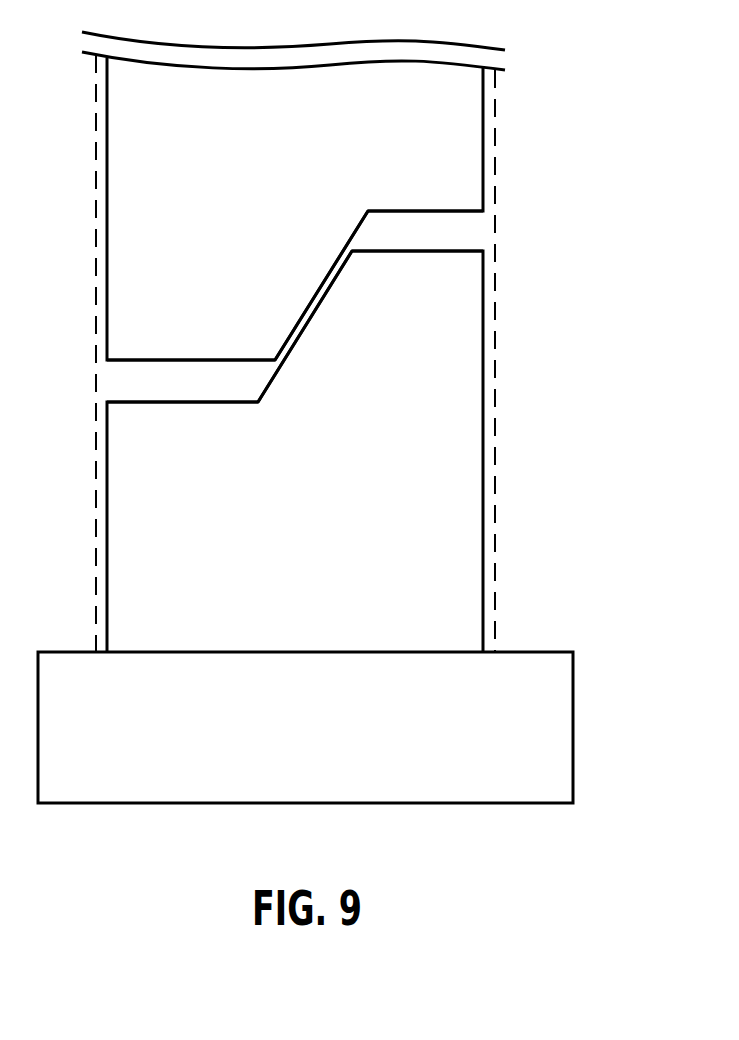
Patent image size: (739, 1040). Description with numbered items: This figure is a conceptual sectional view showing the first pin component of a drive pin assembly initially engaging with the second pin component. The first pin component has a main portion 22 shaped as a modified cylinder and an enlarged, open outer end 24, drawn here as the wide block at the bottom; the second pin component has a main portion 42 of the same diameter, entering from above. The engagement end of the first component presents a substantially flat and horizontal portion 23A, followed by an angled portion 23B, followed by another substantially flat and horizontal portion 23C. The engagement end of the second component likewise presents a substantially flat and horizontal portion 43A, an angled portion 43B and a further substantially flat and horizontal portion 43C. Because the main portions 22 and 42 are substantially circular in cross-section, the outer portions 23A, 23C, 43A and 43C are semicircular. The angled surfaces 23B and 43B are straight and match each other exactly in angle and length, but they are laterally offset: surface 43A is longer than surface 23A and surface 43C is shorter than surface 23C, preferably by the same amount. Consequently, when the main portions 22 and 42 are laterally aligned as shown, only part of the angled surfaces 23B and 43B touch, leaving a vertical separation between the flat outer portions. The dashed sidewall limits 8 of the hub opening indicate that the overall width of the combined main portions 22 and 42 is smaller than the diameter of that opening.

The sidewall limits 8 is at (96, 150).
The main portion 22 is at (120, 562).
The substantially flat and horizontal portion 23A is at (168, 402).
The angled portion 23B is at (298, 337).
The substantially flat and horizontal portion 23C is at (402, 251).
The outer end 24 is at (120, 803).
The main portion 42 is at (125, 240).
The substantially flat and horizontal portion 43A is at (197, 360).
The angled portion 43B is at (323, 283).
The substantially flat and horizontal portion 43C is at (413, 208).